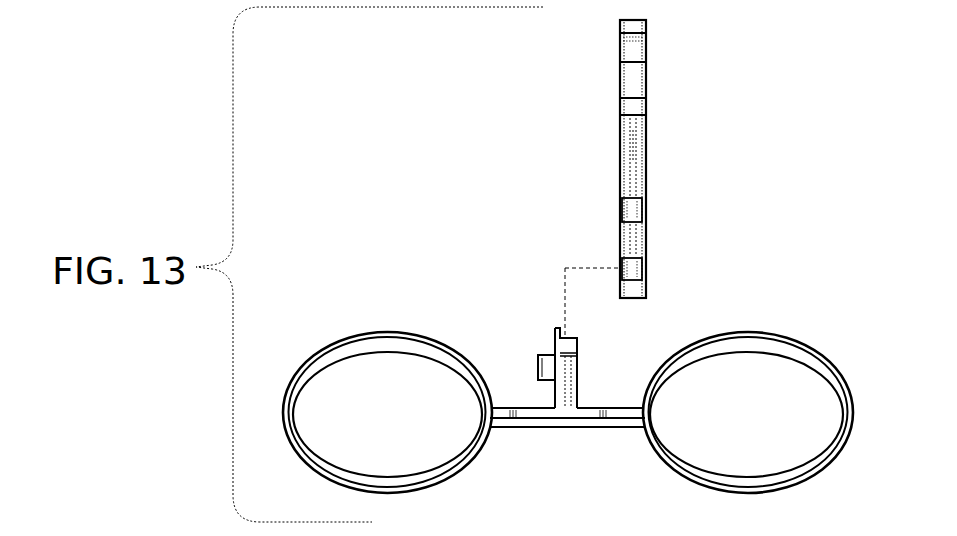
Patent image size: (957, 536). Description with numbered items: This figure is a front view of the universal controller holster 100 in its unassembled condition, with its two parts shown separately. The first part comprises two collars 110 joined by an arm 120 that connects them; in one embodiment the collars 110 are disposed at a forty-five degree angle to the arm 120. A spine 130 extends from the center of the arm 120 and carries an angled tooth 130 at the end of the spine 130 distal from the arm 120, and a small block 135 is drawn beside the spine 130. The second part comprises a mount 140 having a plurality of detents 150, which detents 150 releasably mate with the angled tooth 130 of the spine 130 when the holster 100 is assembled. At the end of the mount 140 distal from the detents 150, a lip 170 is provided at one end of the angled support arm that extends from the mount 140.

The universal controller holster 100 is at (695, 92).
The collars 110 is at (700, 455).
The arm 120 is at (563, 413).
The spine 130 is at (578, 383).
The mounting block 135 is at (542, 363).
The mount 140 is at (686, 159).
The detents 150 is at (628, 268).
The lip 170 is at (623, 50).